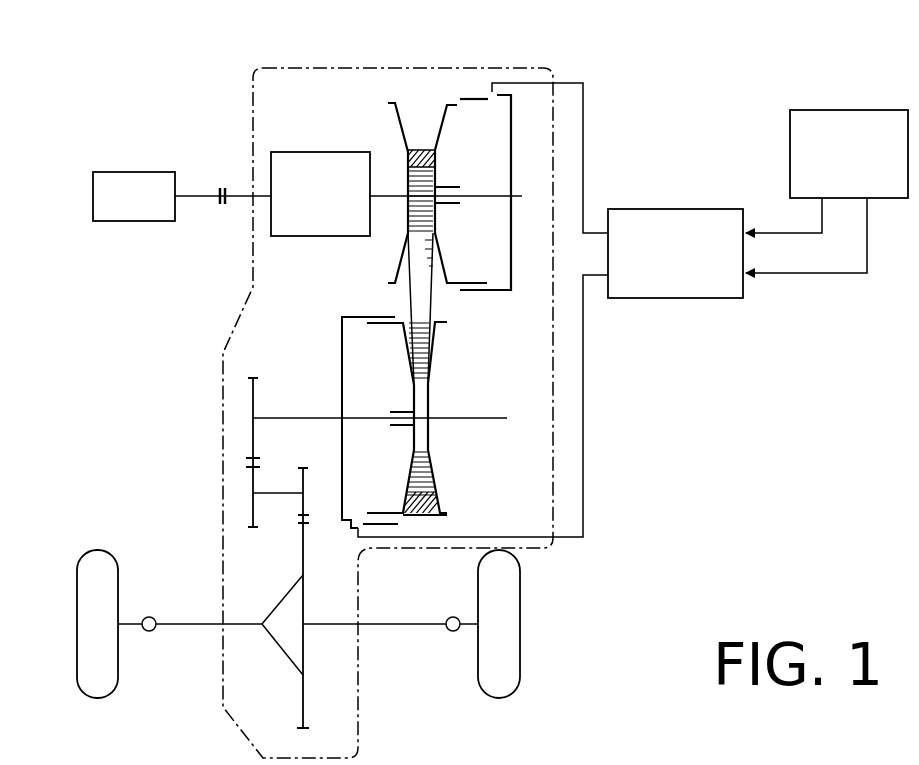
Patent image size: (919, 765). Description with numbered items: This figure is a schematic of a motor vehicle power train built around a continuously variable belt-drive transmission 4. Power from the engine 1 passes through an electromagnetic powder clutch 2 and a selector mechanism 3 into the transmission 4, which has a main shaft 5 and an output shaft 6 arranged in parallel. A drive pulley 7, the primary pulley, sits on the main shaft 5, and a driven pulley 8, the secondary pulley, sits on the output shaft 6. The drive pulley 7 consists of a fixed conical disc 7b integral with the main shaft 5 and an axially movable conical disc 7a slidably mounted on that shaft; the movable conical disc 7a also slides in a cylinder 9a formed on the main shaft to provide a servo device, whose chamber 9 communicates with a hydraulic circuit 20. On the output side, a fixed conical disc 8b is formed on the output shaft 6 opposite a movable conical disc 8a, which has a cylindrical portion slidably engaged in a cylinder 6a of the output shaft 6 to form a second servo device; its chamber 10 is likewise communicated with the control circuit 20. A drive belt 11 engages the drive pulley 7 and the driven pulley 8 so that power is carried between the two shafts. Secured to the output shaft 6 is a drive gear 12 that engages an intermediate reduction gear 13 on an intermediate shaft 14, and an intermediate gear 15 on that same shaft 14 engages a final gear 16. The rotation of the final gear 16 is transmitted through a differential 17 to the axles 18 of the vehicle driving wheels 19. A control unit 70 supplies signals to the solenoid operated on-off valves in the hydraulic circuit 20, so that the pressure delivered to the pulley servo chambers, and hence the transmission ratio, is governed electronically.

The engine 1 is at (139, 172).
The electromagnetic powder clutch 2 is at (224, 186).
The selector mechanism 3 is at (327, 152).
The continuously variable belt-drive transmission 4 is at (428, 104).
The main shaft 5 is at (388, 199).
The output shaft 6 is at (298, 418).
The cylinder 6a is at (363, 318).
The drive pulley 7 is at (426, 147).
The movable conical disc 7a is at (460, 100).
The fixed conical disc 7b is at (398, 136).
The driven pulley 8 is at (430, 417).
The movable conical disc 8a is at (402, 332).
The fixed conical disc 8b is at (432, 362).
The chamber 9 is at (492, 152).
The cylinder 9a is at (490, 291).
The chamber 10 is at (350, 352).
The drive belt 11 is at (427, 513).
The drive gear 12 is at (254, 377).
The intermediate reduction gear 13 is at (255, 530).
The intermediate shaft 14 is at (280, 492).
The intermediate gear 15 is at (303, 467).
The final gear 16 is at (303, 730).
The differential 17 is at (287, 607).
The axles 18 is at (135, 627).
The driving wheels 19 is at (108, 582).
The hydraulic circuit 20 is at (672, 300).
The control unit 70 is at (828, 110).